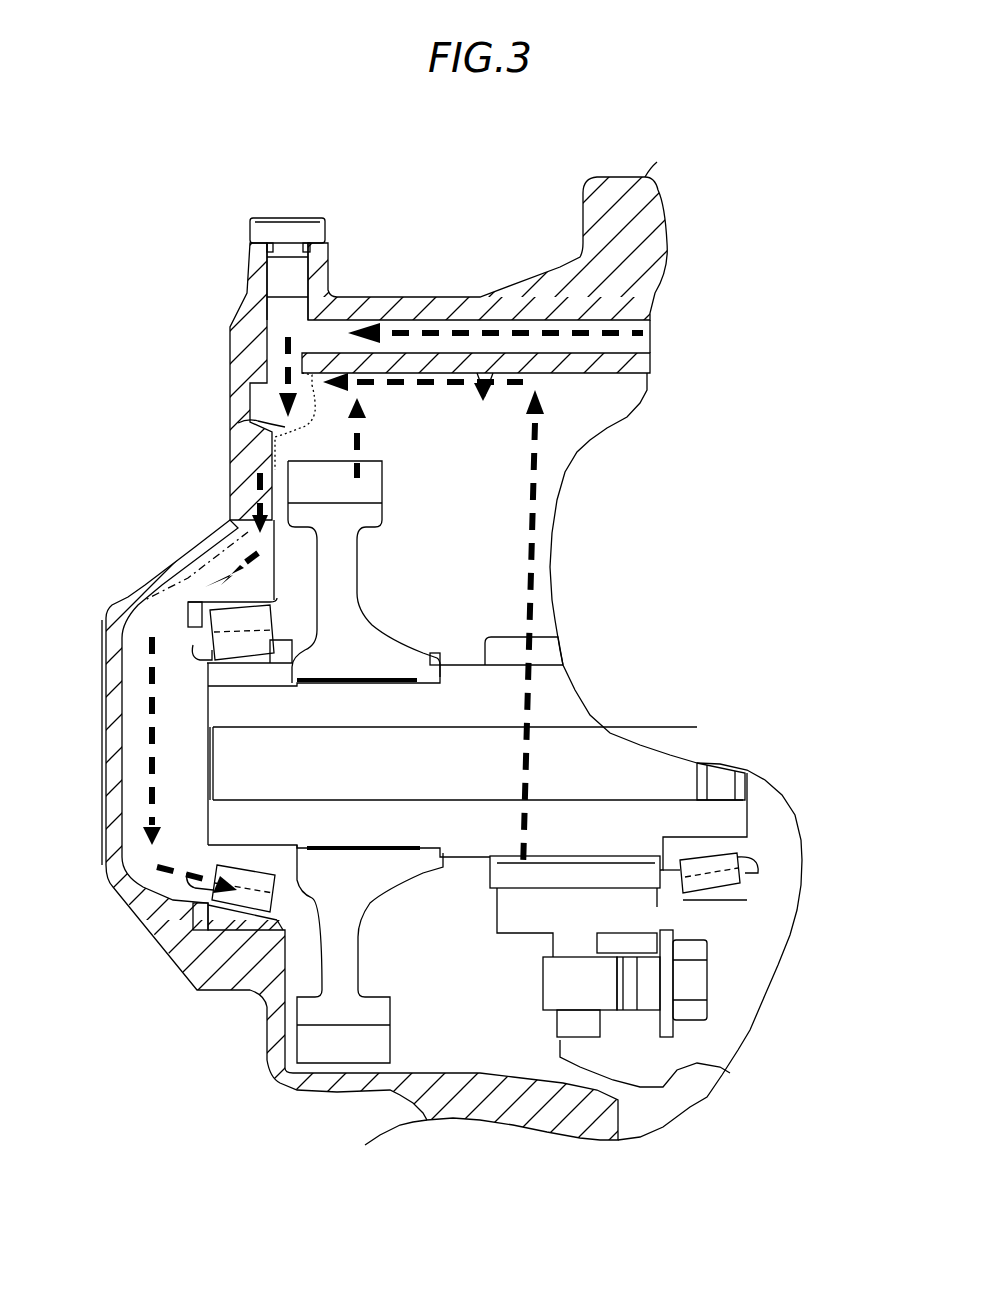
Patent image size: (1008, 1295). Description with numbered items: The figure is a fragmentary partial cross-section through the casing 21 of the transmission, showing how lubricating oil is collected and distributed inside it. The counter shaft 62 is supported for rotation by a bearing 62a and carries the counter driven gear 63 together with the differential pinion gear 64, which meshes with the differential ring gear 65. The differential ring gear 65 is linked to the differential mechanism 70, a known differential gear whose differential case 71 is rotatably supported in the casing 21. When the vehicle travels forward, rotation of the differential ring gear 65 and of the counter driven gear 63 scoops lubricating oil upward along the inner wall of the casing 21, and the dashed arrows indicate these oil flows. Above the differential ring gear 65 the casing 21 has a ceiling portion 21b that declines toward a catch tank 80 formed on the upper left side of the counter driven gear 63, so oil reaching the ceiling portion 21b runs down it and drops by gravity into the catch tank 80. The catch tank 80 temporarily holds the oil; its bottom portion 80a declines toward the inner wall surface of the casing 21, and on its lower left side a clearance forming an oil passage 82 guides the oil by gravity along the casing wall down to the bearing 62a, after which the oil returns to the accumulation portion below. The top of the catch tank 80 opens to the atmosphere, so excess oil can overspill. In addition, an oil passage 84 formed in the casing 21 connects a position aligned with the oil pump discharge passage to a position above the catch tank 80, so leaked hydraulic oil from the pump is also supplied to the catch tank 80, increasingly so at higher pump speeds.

The casing 21 is at (232, 484).
The ceiling portion 21b is at (492, 393).
The counter shaft 62 is at (203, 710).
The bearing 62a is at (240, 915).
The counter driven gear 63 is at (287, 551).
The differential pinion gear 64 is at (533, 636).
The differential ring gear 65 is at (757, 917).
The differential mechanism 70 is at (835, 1038).
The differential case 71 is at (732, 1068).
The catch tank 80 is at (154, 389).
The bottom portion 80a is at (238, 430).
The oil passage 82 is at (132, 598).
The oil passage 84 is at (440, 313).